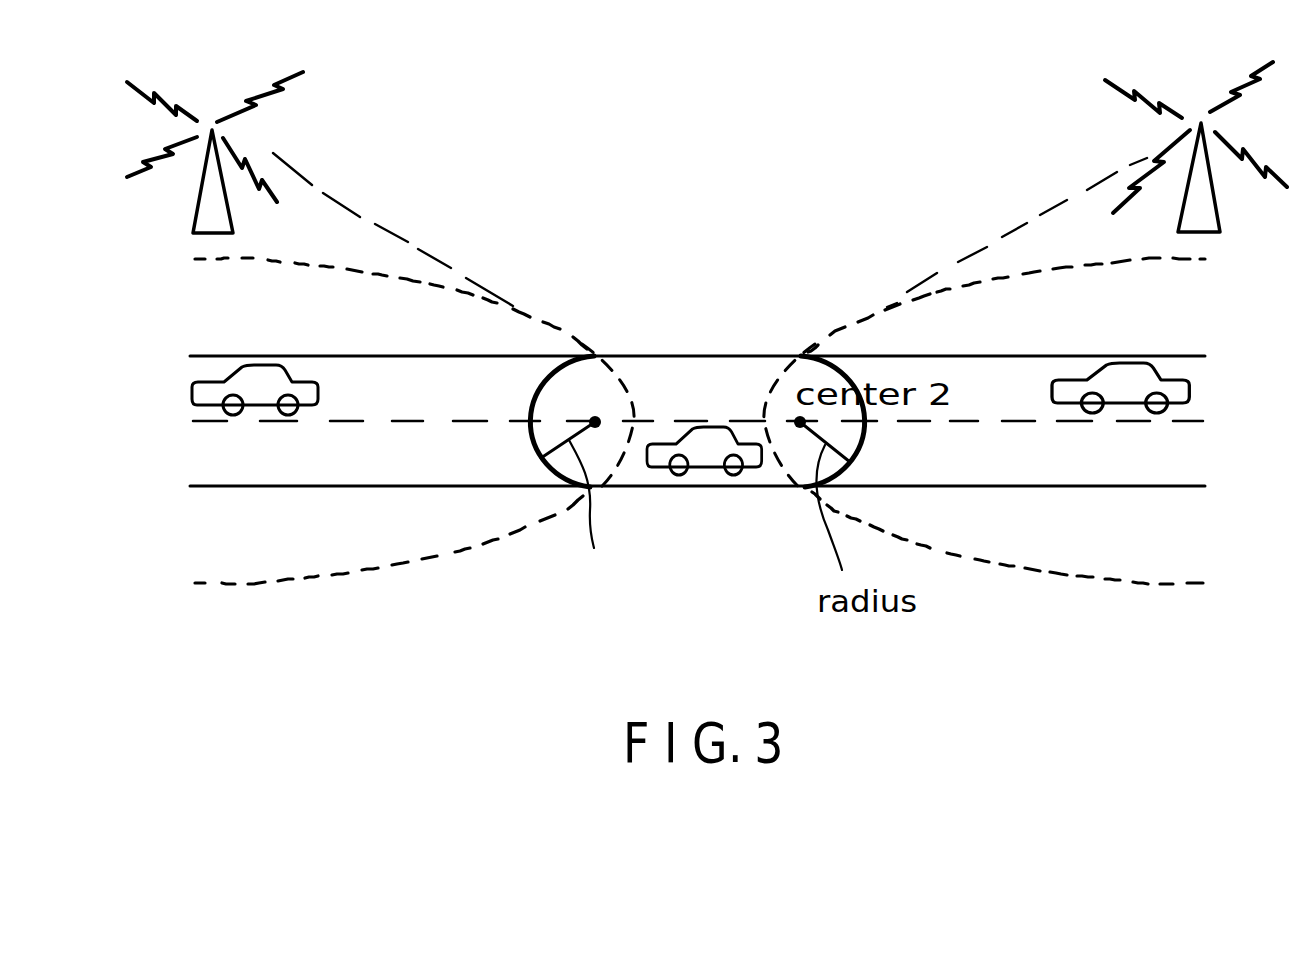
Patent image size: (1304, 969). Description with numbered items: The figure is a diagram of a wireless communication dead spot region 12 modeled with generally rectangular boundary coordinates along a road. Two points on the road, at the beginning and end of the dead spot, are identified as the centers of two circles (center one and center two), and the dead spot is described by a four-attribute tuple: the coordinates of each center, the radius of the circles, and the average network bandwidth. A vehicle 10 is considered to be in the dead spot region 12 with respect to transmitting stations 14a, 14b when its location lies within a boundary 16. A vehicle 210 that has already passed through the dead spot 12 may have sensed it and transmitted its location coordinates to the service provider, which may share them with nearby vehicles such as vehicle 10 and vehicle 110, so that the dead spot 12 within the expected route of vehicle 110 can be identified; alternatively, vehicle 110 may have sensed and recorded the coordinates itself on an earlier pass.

The vehicle 10 is at (710, 453).
The dead spot region 12 is at (697, 356).
The transmitting station 14a is at (273, 150).
The transmitting station 14b is at (1140, 141).
The boundary 16 is at (630, 355).
The vehicle 110 is at (262, 390).
The vehicle 210 is at (1128, 390).